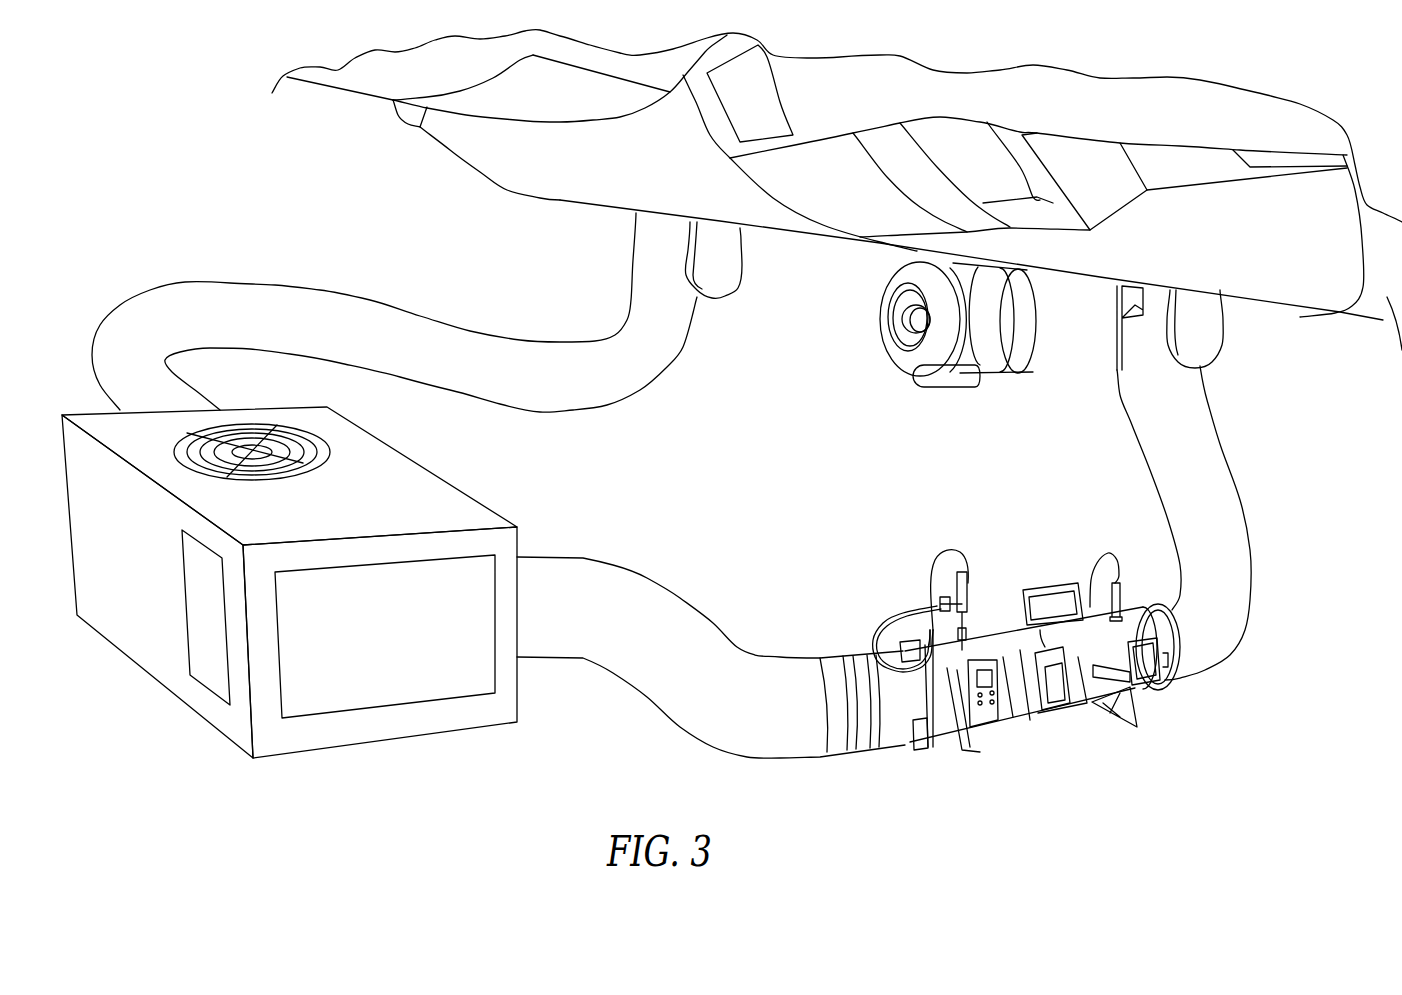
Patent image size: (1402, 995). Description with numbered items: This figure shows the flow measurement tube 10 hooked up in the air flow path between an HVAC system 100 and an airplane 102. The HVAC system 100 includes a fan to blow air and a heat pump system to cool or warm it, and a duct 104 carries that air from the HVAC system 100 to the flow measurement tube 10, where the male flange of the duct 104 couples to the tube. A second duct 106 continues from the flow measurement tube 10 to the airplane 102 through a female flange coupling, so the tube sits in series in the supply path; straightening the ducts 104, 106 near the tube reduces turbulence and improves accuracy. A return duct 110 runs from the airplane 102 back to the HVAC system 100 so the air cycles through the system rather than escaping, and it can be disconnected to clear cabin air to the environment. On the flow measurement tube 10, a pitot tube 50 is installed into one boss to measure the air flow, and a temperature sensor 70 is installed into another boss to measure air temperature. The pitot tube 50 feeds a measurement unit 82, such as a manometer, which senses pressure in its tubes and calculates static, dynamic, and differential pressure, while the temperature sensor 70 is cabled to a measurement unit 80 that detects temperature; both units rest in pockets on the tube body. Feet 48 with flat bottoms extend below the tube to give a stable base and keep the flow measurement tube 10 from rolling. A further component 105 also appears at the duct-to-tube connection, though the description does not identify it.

The flow measurement tube 10 is at (1040, 621).
The feet 48 is at (1140, 713).
The pitot tube 50 is at (970, 583).
The temperature sensor 70 is at (1122, 607).
The measurement unit 80 is at (1053, 688).
The measurement unit 82 is at (990, 708).
The HVAC system 100 is at (140, 650).
The airplane 102 is at (563, 188).
The duct 104 is at (630, 578).
The clamp 105 is at (923, 740).
The duct 106 is at (1240, 507).
The return duct 110 is at (675, 347).